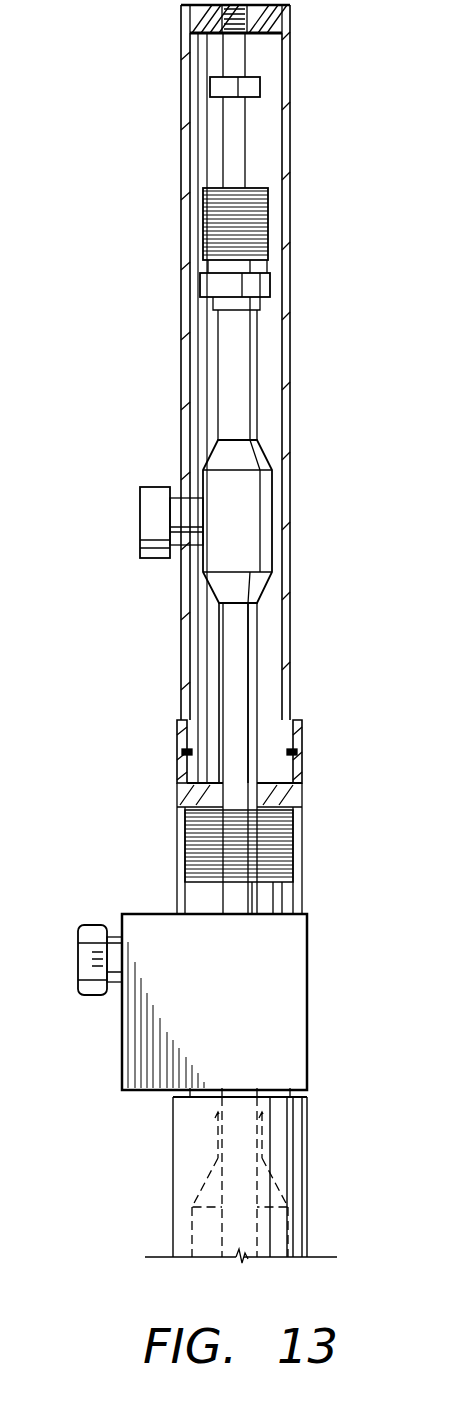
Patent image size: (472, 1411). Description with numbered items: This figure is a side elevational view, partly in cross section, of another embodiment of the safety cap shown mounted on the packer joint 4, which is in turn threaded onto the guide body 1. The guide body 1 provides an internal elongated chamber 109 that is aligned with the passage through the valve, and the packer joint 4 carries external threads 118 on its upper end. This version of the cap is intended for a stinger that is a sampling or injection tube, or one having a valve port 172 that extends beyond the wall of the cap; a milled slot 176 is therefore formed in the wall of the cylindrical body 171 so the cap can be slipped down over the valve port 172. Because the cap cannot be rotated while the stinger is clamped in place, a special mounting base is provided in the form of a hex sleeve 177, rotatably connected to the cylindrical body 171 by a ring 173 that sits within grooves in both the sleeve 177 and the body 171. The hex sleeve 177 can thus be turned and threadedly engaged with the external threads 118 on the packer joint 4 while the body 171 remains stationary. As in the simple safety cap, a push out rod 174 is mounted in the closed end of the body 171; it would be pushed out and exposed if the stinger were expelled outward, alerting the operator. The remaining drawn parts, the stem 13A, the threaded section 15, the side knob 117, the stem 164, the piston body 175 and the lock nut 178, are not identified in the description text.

The guide body 1 is at (307, 1137).
The packer joint 4 is at (288, 1012).
The valve stem rod 13A is at (240, 660).
The threaded adjustment section 15 is at (260, 210).
The elongated chamber 109 is at (207, 1232).
The side knob 117 is at (93, 925).
The external threads 118 is at (273, 863).
The stem 164 is at (273, 618).
The cylindrical body 171 is at (287, 558).
The valve port 172 is at (152, 488).
The ring 173 is at (293, 745).
The push out rod 174 is at (262, 89).
The piston body 175 is at (265, 515).
The milled slot 176 is at (192, 327).
The hex sleeve 177 is at (302, 797).
The lock nut 178 is at (260, 288).